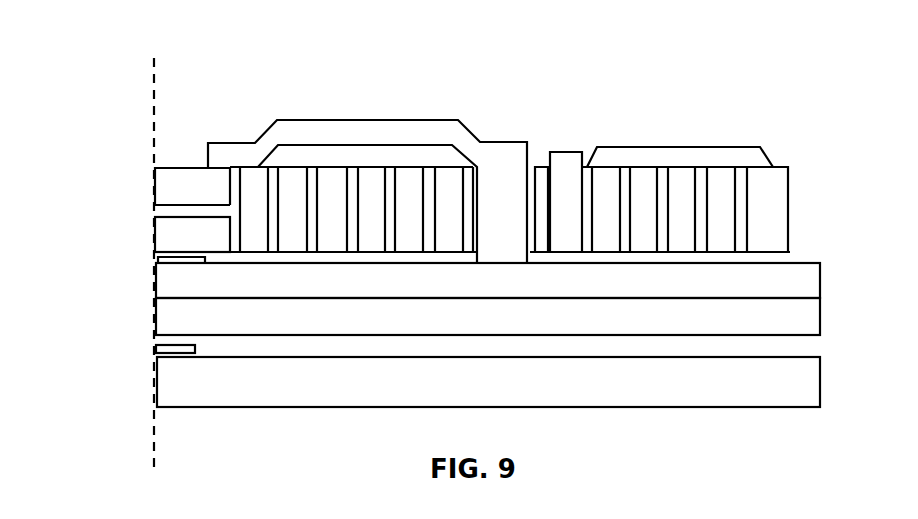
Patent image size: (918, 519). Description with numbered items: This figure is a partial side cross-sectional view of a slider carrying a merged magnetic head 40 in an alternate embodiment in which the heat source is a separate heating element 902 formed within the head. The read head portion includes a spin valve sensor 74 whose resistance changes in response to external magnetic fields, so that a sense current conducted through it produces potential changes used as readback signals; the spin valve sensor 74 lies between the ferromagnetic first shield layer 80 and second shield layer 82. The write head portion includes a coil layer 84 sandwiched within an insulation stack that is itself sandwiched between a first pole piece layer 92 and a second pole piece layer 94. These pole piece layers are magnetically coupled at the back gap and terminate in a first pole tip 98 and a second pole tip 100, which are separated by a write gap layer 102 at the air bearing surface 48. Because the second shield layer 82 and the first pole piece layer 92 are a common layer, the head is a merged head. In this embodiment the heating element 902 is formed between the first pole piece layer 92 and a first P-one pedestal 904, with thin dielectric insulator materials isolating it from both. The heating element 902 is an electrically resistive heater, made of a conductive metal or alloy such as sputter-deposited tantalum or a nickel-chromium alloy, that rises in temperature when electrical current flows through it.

The merged magnetic head 40 is at (510, 63).
The air bearing surface (ABS) 48 is at (154, 84).
The second pole piece layer 94 is at (176, 184).
The second pole tip 100 is at (153, 186).
The write gap layer 102 is at (160, 212).
The first P1 pedestal 904 is at (155, 238).
The heating element 902 is at (155, 262).
The first pole tip 98 is at (155, 292).
The second shield layer 82 is at (155, 328).
The first shield layer 80 is at (155, 385).
The first pole piece layer 92 is at (248, 283).
The spin valve sensor 74 is at (180, 355).
The coil layer 84 is at (367, 160).